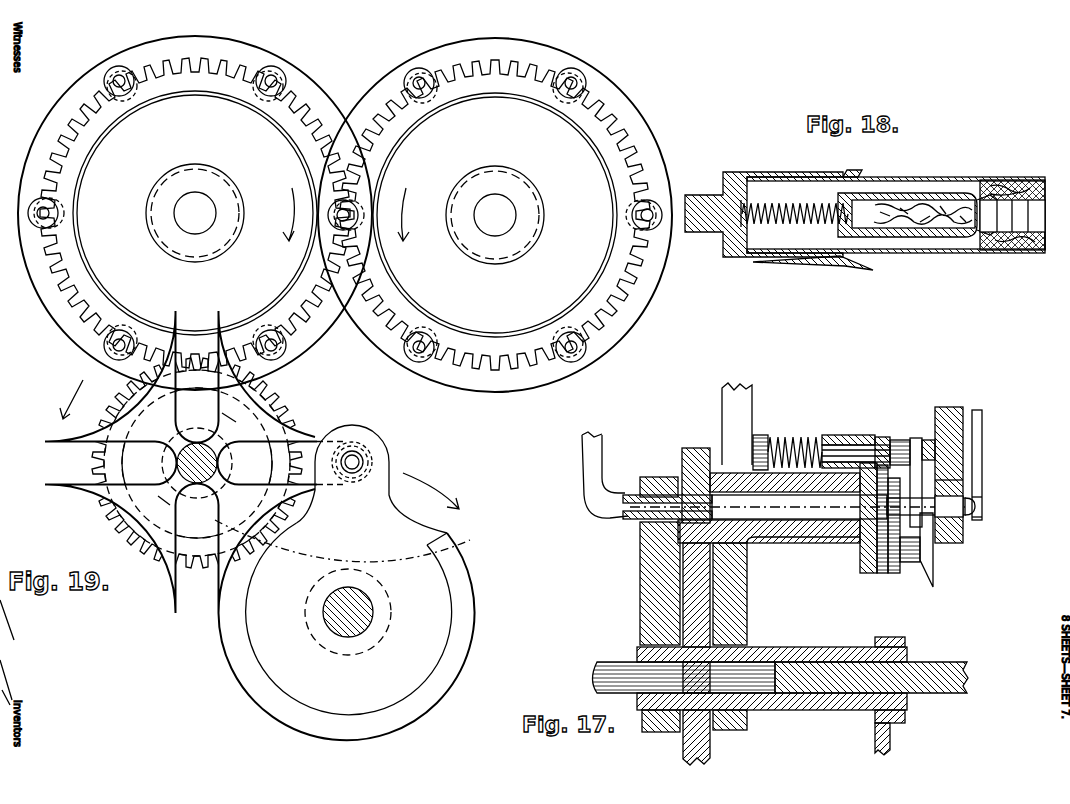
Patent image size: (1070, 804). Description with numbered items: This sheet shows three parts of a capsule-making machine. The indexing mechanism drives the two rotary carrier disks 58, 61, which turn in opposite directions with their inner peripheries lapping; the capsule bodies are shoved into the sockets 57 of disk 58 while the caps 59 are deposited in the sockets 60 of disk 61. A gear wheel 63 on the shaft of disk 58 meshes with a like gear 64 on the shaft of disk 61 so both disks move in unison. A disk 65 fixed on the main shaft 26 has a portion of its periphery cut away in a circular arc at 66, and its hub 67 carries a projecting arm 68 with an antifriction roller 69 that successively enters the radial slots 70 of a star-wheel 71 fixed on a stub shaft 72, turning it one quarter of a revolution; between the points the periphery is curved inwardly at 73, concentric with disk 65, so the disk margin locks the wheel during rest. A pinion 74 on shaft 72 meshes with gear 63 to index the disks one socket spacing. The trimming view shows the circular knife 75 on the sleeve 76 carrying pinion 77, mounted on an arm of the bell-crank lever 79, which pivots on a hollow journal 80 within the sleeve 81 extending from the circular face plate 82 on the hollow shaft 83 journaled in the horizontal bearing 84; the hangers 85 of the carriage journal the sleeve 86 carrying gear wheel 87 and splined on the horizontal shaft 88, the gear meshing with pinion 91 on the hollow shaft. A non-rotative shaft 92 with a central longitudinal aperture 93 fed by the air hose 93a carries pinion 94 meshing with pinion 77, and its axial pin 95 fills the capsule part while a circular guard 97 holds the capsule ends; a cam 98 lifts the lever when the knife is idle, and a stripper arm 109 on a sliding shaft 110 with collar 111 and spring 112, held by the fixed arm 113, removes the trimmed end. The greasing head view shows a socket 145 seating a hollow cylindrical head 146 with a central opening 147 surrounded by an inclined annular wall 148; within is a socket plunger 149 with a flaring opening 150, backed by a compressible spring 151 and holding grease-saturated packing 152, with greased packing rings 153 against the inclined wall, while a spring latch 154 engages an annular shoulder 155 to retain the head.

In FIG. 19, the main shaft 26 is at (360, 627).
In FIG. 19, the sockets 57 is at (116, 78).
In FIG. 19, the rotary carrier disk 58 is at (40, 301).
In FIG. 17, the caps 59 is at (972, 510).
In FIG. 19, the sockets 60 is at (415, 78).
In FIG. 19, the rotary carrier disk 61 is at (648, 121).
In FIG. 17, the rotary carrier disk 61 is at (940, 408).
In FIG. 19, the gear wheel 63 is at (195, 213).
In FIG. 19, the gear 64 is at (495, 215).
In FIG. 19, the disk 65 is at (474, 603).
In FIG. 19, the cut-away periphery portion 66 is at (440, 538).
In FIG. 19, the hub 67 is at (349, 619).
In FIG. 19, the projecting arm 68 is at (393, 446).
In FIG. 19, the antifriction roller 69 is at (362, 449).
In FIG. 19, the radial slots 70 is at (195, 459).
In FIG. 19, the star-wheel 71 is at (196, 462).
In FIG. 19, the stub shaft 72 is at (210, 478).
In FIG. 19, the curved surface 73 is at (51, 440).
In FIG. 19, the pinion 74 is at (280, 404).
In FIG. 17, the circular knife 75 is at (929, 582).
In FIG. 17, the sleeve 76 is at (915, 563).
In FIG. 17, the pinion 77 is at (895, 575).
In FIG. 17, the bell-crank lever 79 is at (884, 437).
In FIG. 17, the hollow journal 80 is at (854, 436).
In FIG. 17, the sleeve 81 is at (840, 440).
In FIG. 17, the circular face plate 82 is at (860, 575).
In FIG. 17, the hollow shaft 83 is at (805, 543).
In FIG. 17, the horizontal bearing 84 is at (775, 543).
In FIG. 17, the hangers 85 is at (756, 619).
In FIG. 17, the sleeve 86 is at (800, 710).
In FIG. 17, the gear wheel 87 is at (712, 594).
In FIG. 17, the horizontal shaft 88 is at (951, 662).
In FIG. 17, the pinion 91 is at (697, 448).
In FIG. 17, the non-rotative shaft 92 is at (846, 520).
In FIG. 17, the central longitudinal aperture 93 is at (658, 485).
In FIG. 17, the air hose 93a is at (582, 468).
In FIG. 17, the pinion 94 is at (913, 482).
In FIG. 17, the pin 95 is at (957, 545).
In FIG. 17, the circular guard 97 is at (981, 432).
In FIG. 17, the cam 98 is at (877, 734).
In FIG. 17, the stripper arm 109 is at (913, 474).
In FIG. 17, the shaft 110 is at (905, 440).
In FIG. 17, the collar 111 is at (761, 435).
In FIG. 17, the spring 112 is at (796, 440).
In FIG. 17, the fixed arm 113 is at (722, 398).
In FIG. 18, the socket 145 is at (790, 172).
In FIG. 18, the hollow cylindrical head 146 is at (962, 177).
In FIG. 18, the central opening 147 is at (1048, 185).
In FIG. 18, the inclined annular wall 148 is at (1030, 250).
In FIG. 18, the socket plunger 149 is at (950, 240).
In FIG. 18, the flaring opening 150 is at (981, 244).
In FIG. 18, the compressible spring 151 is at (798, 226).
In FIG. 18, the packing 152 is at (905, 200).
In FIG. 18, the greased packing rings 153 is at (1005, 188).
In FIG. 18, the spring latch 154 is at (845, 266).
In FIG. 18, the annular shoulder 155 is at (860, 162).